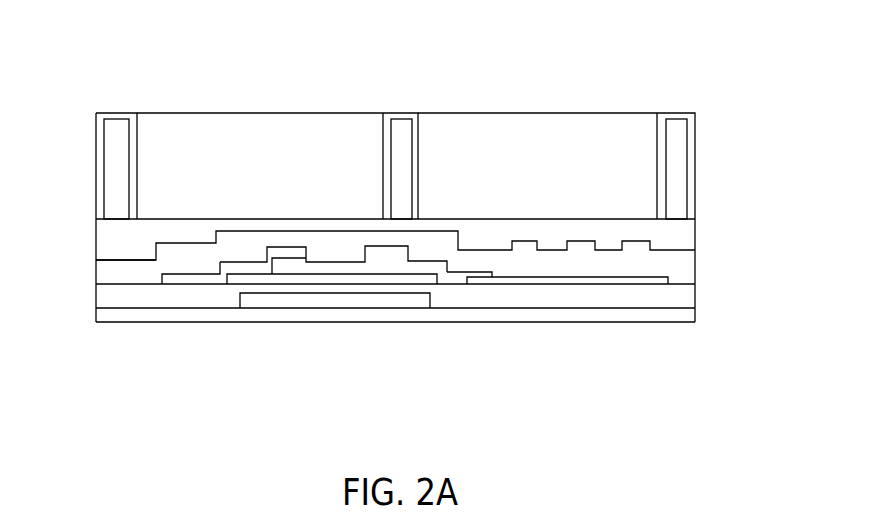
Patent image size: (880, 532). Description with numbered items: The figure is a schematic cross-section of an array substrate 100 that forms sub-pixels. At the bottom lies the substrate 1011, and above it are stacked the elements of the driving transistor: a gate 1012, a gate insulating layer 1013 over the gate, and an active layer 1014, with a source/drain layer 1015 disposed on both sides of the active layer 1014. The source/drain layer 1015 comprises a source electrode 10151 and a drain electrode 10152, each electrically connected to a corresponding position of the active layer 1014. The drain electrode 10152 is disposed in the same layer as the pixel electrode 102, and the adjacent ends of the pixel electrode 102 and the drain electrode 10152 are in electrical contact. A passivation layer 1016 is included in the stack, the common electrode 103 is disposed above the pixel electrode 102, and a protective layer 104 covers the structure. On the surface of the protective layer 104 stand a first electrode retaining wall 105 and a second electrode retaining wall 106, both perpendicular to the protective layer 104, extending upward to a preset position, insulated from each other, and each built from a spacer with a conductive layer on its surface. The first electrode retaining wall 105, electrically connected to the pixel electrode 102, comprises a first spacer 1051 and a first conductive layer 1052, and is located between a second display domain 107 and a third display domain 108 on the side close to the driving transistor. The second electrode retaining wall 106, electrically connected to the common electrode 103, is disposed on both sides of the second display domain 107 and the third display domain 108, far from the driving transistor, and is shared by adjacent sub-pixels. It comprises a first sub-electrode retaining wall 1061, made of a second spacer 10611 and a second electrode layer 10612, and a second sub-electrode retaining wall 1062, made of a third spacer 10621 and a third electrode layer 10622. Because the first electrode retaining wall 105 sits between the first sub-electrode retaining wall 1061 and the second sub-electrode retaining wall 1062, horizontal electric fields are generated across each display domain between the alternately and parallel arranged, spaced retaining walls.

The array substrate 100 is at (148, 43).
The substrate 1011 is at (660, 314).
The pixel electrode 102 is at (605, 287).
The gate 1012 is at (267, 300).
The gate insulating layer 1013 is at (527, 290).
The active layer 1014 is at (346, 274).
The source/drain layer 1015 is at (292, 355).
The source electrode 10151 is at (200, 278).
The drain electrode 10152 is at (455, 274).
The passivation layer 1016 is at (130, 270).
The common electrode 103 is at (638, 248).
The protective layer 104 is at (663, 235).
The first electrode retaining wall 105 is at (401, 257).
The first spacer 1051 is at (402, 127).
The first conductive layer 1052 is at (387, 125).
The second electrode retaining wall 106 is at (398, 257).
The first sub-electrode retaining wall 1061 is at (190, 257).
The second spacer 10611 is at (117, 132).
The second electrode layer 10612 is at (103, 133).
The second sub-electrode retaining wall 1062 is at (624, 257).
The third spacer 10621 is at (676, 128).
The third electrode layer 10622 is at (692, 128).
The second display domain 107 is at (241, 133).
The third display domain 108 is at (535, 133).